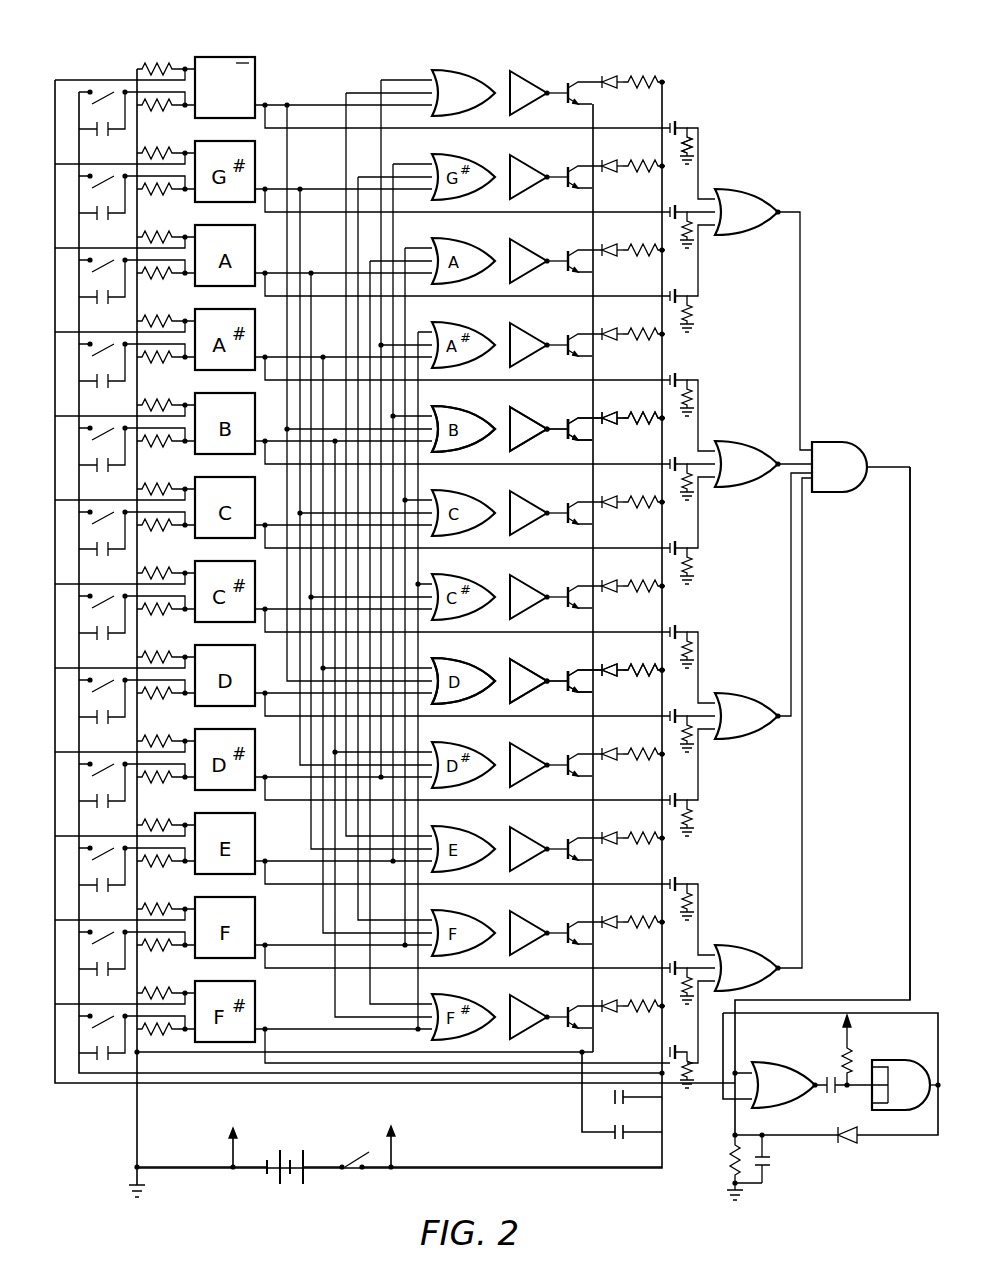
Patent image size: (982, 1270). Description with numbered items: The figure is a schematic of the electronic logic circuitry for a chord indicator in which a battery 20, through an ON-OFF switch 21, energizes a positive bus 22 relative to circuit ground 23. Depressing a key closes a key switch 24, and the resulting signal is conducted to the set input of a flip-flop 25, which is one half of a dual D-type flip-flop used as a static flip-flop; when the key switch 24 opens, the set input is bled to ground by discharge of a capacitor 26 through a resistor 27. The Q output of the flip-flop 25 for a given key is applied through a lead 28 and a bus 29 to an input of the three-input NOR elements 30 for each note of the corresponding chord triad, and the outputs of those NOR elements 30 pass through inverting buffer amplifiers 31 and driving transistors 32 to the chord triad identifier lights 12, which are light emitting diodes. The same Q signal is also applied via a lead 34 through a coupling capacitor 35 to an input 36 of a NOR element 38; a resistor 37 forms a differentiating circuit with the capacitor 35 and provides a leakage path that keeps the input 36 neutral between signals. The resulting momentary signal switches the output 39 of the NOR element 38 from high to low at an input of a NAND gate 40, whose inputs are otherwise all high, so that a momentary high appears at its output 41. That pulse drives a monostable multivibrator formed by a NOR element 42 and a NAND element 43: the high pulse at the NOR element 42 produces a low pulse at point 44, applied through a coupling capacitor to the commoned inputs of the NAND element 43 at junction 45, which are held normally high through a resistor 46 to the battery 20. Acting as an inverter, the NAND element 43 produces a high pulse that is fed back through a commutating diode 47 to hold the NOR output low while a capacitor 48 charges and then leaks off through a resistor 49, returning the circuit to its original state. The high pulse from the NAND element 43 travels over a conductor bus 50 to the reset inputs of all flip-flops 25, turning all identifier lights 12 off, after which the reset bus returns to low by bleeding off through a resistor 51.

The chord triad identifier lights 12 is at (604, 74).
The battery 20 is at (304, 1160).
The ON-OFF switch 21 is at (360, 1158).
The positive bus 22 is at (664, 1160).
The circuit ground 23 is at (136, 1158).
The key switch 24 is at (100, 92).
The flip-flop 25 is at (228, 57).
The capacitor 26 is at (108, 135).
The resistor 27 is at (173, 111).
The lead 28 is at (272, 102).
The bus 29 is at (300, 106).
The NOR element 30 is at (478, 74).
The inverting buffer amplifier 31 is at (532, 76).
The driving transistor 32 is at (570, 104).
The lead 34 is at (298, 136).
The coupling capacitor 35 is at (680, 122).
The input 36 is at (698, 178).
The resistor 37 is at (694, 142).
The NOR element 38 is at (744, 194).
The output 39 is at (800, 402).
The NAND gate 40 is at (861, 452).
The output 41 is at (902, 592).
The NOR element 42 is at (776, 1072).
The NAND element 43 is at (906, 1066).
The output 44 is at (830, 1098).
The junction 45 is at (844, 1098).
The resistor 46 is at (852, 1066).
The commutating diode 47 is at (843, 1142).
The capacitor 48 is at (769, 1166).
The resistor 49 is at (727, 1168).
The conductor bus 50 is at (55, 150).
The resistor 51 is at (170, 65).